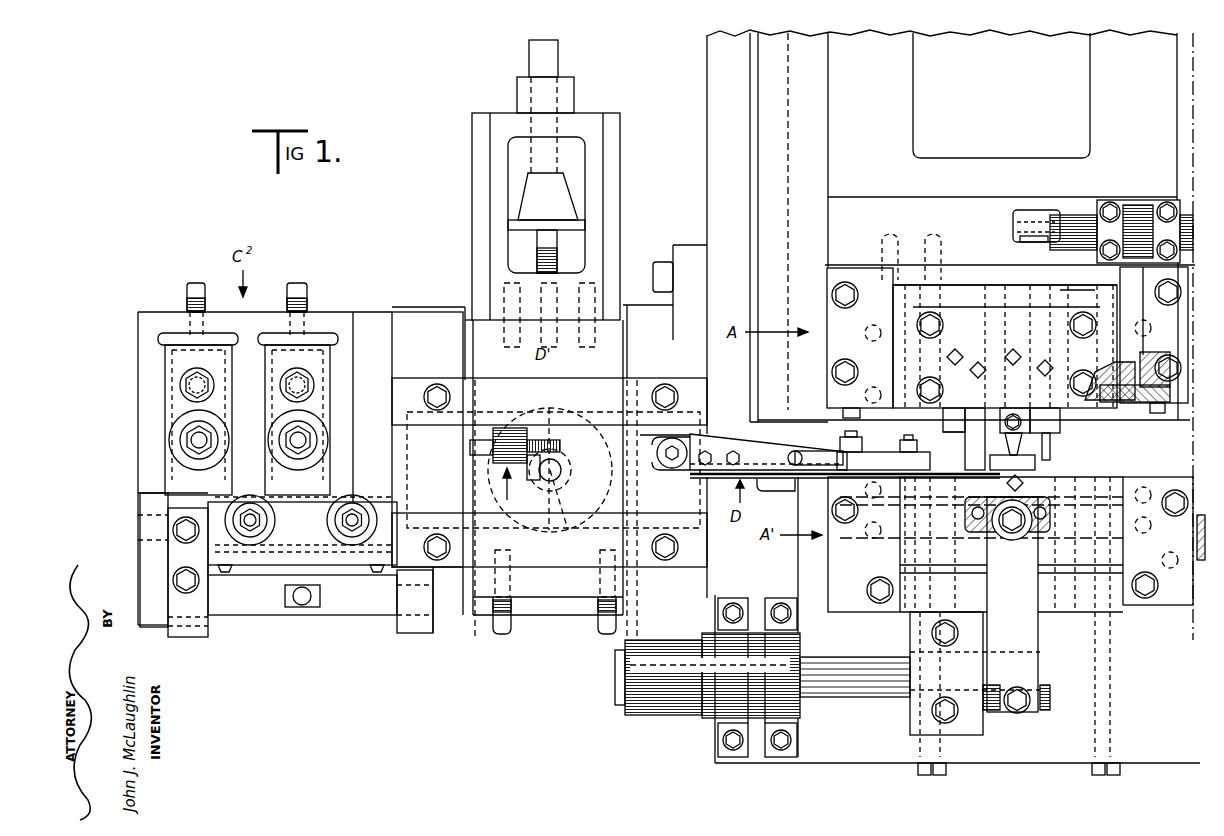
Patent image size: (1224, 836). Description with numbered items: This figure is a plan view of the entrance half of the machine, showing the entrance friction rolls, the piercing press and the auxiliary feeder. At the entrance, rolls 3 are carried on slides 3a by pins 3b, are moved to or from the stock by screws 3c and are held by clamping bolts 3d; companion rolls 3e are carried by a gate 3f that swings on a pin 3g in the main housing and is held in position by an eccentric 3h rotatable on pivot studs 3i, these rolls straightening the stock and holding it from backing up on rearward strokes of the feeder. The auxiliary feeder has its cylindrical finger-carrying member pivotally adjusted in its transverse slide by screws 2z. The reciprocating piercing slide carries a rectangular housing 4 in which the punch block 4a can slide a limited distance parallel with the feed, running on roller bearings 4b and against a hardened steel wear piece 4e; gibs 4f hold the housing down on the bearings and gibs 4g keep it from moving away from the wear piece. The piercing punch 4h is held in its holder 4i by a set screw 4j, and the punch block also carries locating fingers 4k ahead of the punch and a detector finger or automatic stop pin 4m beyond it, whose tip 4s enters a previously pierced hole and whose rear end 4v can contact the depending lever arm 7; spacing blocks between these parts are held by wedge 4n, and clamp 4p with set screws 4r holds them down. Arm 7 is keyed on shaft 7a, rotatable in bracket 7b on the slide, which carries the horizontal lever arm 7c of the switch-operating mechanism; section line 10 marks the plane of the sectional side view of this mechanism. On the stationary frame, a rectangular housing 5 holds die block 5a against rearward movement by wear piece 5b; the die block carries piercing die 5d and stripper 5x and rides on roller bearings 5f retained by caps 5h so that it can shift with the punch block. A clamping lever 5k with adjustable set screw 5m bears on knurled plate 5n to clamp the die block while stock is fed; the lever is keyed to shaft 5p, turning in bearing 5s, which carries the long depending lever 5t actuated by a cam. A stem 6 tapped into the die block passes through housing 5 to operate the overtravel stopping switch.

The screws 2z is at (600, 628).
The rolls 3 is at (270, 413).
The slides 3a is at (268, 357).
The pins 3b is at (295, 440).
The screws 3c is at (187, 296).
The clamping bolts 3d is at (281, 385).
The rolls 3e is at (336, 520).
The gate 3f is at (290, 556).
The pin 3g is at (140, 530).
The eccentric 3h is at (350, 615).
The pivot studs 3i is at (195, 612).
The rectangular housing 4 is at (824, 306).
The punch block 4a is at (1112, 402).
The roller bearings 4b is at (1160, 355).
The hardened steel wear piece 4e is at (972, 280).
The gibs 4f is at (843, 349).
The gibs 4g is at (1135, 403).
The piercing punch 4h is at (975, 443).
The holder 4i is at (1012, 408).
The set screw 4j is at (1042, 422).
The centering or locating fingers 4k is at (968, 413).
The automatic stop pin 4m is at (1024, 446).
The wedge 4n is at (945, 427).
The clamp 4p is at (1020, 310).
The set screws 4r is at (1000, 349).
The tip 4s is at (1048, 455).
The rear end 4v is at (1018, 240).
The stationary rectangular housing 5 is at (1190, 578).
The die block 5a is at (1102, 482).
The hardened steel wear piece 5b is at (1057, 574).
The piercing die 5d is at (1007, 518).
The roller bearings 5f is at (858, 525).
The caps 5h is at (972, 728).
The clamping lever 5k is at (1022, 620).
The adjustable set screw 5m is at (1012, 604).
The knurled plate 5n is at (1040, 535).
The shaft 5p is at (843, 697).
The bearing 5s is at (700, 718).
The long depending lever 5t is at (643, 716).
The stripper 5x is at (988, 460).
The stem 6 is at (1205, 530).
The depending lever arm 7 is at (1013, 221).
The shaft 7a is at (1128, 200).
The bracket 7b is at (1103, 205).
The horizontal lever arm 7c is at (1180, 196).
The section line 10 is at (1060, 178).